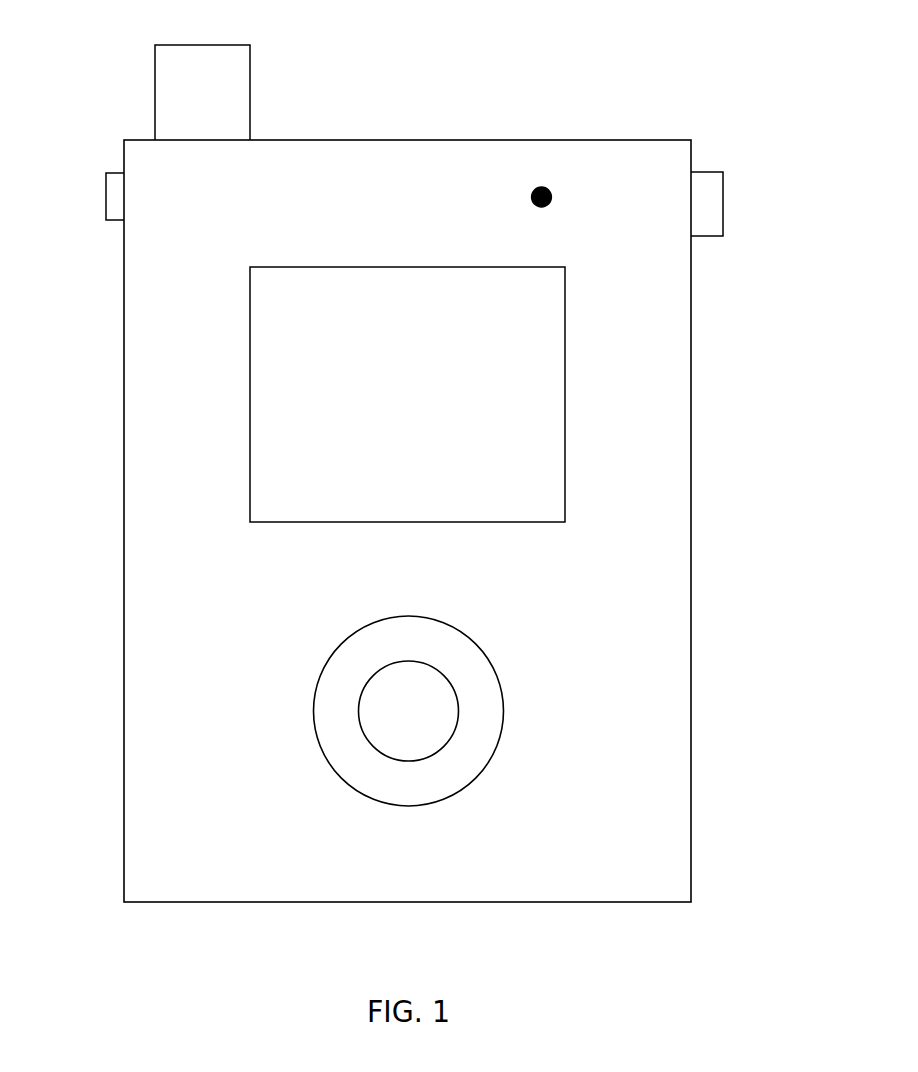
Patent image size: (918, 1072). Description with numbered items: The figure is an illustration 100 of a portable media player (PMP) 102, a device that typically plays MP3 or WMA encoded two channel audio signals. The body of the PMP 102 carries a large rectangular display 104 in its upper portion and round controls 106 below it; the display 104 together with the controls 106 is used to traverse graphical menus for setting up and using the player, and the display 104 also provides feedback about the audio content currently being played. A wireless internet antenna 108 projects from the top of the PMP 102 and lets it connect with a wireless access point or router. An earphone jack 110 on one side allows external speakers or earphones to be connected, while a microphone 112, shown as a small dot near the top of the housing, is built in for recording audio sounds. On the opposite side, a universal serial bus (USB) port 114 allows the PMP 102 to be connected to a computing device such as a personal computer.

The illustration 100 is at (566, 45).
The portable media player (PMP) 102 is at (215, 776).
The display 104 is at (427, 405).
The controls 106 is at (427, 720).
The wireless internet antenna 108 is at (221, 102).
The earphone jack 110 is at (723, 185).
The microphone 112 is at (550, 192).
The universal serial bus (USB) port 114 is at (106, 203).